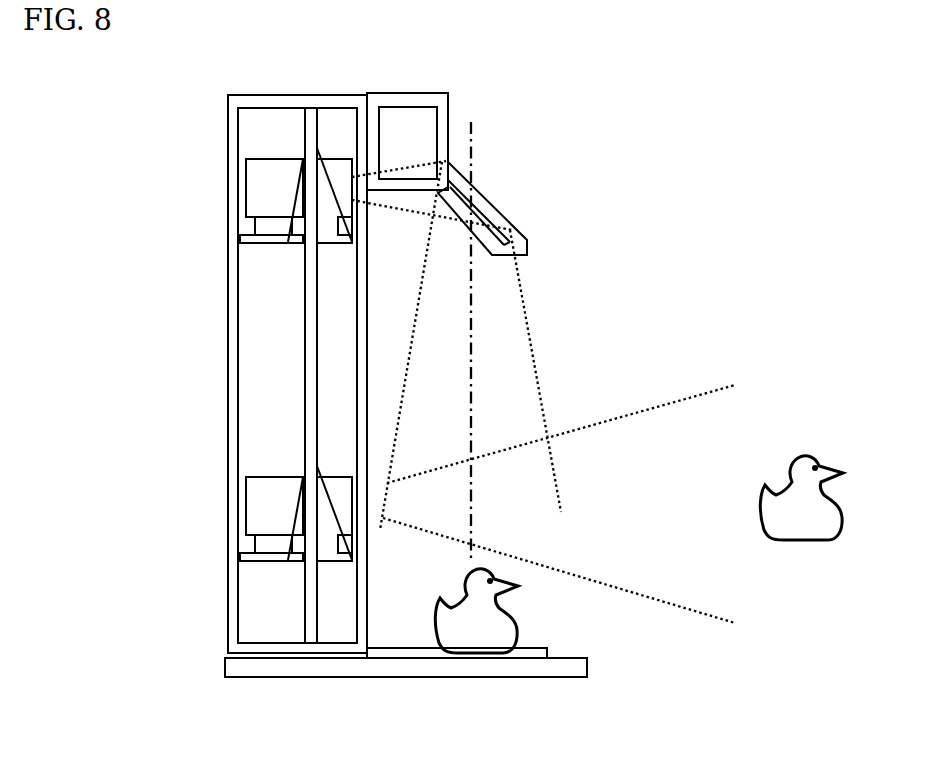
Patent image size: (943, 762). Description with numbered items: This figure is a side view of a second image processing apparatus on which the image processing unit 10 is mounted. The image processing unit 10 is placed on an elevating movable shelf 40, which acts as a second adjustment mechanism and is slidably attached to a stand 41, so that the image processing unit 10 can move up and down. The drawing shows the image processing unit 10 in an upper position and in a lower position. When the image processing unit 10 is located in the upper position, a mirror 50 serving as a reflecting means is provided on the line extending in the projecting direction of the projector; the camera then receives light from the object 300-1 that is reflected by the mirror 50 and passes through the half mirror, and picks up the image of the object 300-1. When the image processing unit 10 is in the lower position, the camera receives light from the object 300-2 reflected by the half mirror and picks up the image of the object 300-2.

The image processing unit 10 is at (257, 502).
The movable shelf 40 is at (242, 552).
The stand 41 is at (233, 165).
The mirror 50 is at (475, 187).
The object 300-1 is at (482, 643).
The object 300-2 is at (810, 527).